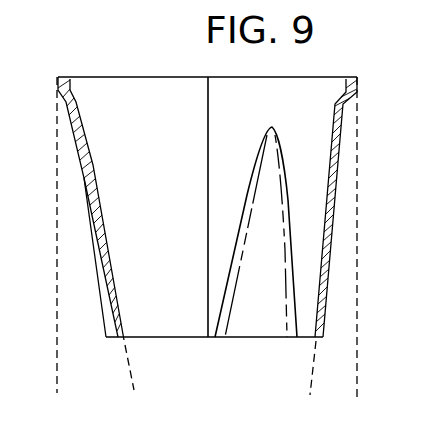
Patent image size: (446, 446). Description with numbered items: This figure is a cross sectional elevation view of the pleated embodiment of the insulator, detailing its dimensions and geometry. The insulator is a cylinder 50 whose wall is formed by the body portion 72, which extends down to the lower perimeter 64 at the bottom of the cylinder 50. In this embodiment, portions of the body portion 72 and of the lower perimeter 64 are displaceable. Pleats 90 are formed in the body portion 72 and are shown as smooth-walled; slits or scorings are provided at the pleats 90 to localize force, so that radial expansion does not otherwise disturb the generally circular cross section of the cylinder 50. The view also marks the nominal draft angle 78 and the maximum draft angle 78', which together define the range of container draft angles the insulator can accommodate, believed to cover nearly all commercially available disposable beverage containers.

The cylinder 50 is at (150, 66).
The lower perimeter 64 is at (178, 337).
The body portion 72 is at (310, 181).
The nominal draft angle 78 is at (335, 239).
The maximum draft angle 78' is at (89, 235).
The pleats 90 is at (258, 315).